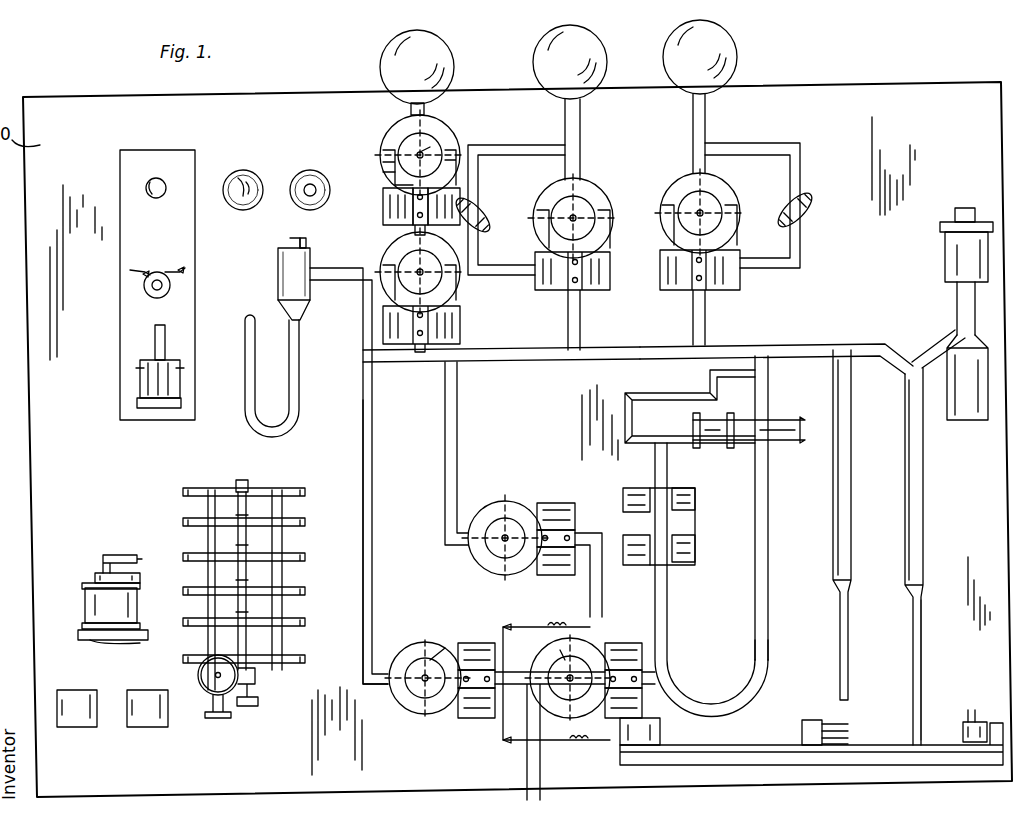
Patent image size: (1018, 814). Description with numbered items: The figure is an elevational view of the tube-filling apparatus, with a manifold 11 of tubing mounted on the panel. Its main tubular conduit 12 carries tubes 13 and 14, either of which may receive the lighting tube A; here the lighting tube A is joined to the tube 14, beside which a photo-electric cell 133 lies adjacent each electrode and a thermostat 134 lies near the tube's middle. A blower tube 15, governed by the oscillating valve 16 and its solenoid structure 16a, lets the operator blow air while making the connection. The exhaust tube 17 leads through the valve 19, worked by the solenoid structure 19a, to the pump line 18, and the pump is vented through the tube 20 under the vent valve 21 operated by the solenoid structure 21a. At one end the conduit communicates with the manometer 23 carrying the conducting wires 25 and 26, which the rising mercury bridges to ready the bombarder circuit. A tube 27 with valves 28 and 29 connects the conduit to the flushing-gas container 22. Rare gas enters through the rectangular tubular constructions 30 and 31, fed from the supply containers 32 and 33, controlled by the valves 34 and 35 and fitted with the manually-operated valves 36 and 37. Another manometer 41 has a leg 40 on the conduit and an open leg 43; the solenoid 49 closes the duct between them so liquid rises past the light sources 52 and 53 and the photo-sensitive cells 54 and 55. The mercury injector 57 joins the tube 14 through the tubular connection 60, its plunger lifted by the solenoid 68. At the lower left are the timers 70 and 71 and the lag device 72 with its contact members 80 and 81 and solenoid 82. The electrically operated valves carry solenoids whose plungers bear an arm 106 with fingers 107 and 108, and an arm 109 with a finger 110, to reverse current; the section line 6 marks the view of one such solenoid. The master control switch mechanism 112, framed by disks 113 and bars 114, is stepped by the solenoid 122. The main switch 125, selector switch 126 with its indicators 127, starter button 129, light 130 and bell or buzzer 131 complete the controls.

The section line 6 is at (556, 694).
The manifold 11 is at (755, 343).
The main tubular conduit 12 is at (605, 350).
The tube 13 is at (833, 487).
The tube 14 is at (922, 498).
The blower tube 15 is at (590, 583).
The oscillating valve 16 is at (506, 515).
The solenoid structure 16a is at (575, 520).
The exhaust tube 17 is at (366, 525).
The tube 18 is at (528, 764).
The valve 19 is at (425, 658).
The solenoid structure 19a is at (485, 715).
The vent tube 20 is at (683, 672).
The vent valve 21 is at (582, 650).
The solenoid structure 21a is at (650, 680).
The container 22 is at (420, 70).
The manometer 23 is at (292, 322).
The conducting wire 25 is at (290, 244).
The conducting wire 26 is at (318, 240).
The tube 27 is at (460, 240).
The valve 28 is at (400, 132).
The valve 29 is at (395, 265).
The rectangular tubular construction 30 is at (582, 160).
The rectangular tubular construction 31 is at (692, 150).
The supply container 32 is at (575, 55).
The supply container 33 is at (705, 58).
The valve 34 is at (585, 210).
The valve 35 is at (712, 200).
The manually-operated valve 36 is at (478, 205).
The manually-operated valve 37 is at (800, 200).
The leg 40 is at (755, 510).
The manometer 41 is at (752, 580).
The leg 43 is at (667, 605).
The solenoid 49 is at (715, 438).
The light source 52 is at (693, 550).
The light source 53 is at (693, 496).
The photo-sensitive cell 54 is at (632, 565).
The photo-sensitive cell 55 is at (635, 487).
The mercury injector 57 is at (958, 332).
The tubular connection 60 is at (925, 340).
The solenoid 68 is at (945, 252).
The timer 70 is at (77, 727).
The timer 71 is at (147, 727).
The lag device 72 is at (85, 608).
The electrical contact member 80 is at (140, 560).
The contact member 81 is at (136, 568).
The solenoid 82 is at (120, 607).
The arm 106 is at (383, 160).
The finger 107 is at (383, 178).
The finger 108 is at (385, 145).
The arm 109 is at (452, 155).
The finger 110 is at (437, 140).
The master control switch mechanism 112 is at (246, 480).
The disk 113 is at (298, 625).
The bar 114 is at (283, 548).
The solenoid 122 is at (210, 683).
The main switch 125 is at (136, 405).
The selector switch 126 is at (148, 292).
The indicator 127 is at (185, 268).
The starter button 129 is at (158, 178).
The light 130 is at (245, 178).
The bell or buzzer 131 is at (308, 182).
The photo-electric cell 133 is at (660, 730).
The thermostat 134 is at (810, 720).
The lighting tube A is at (752, 745).